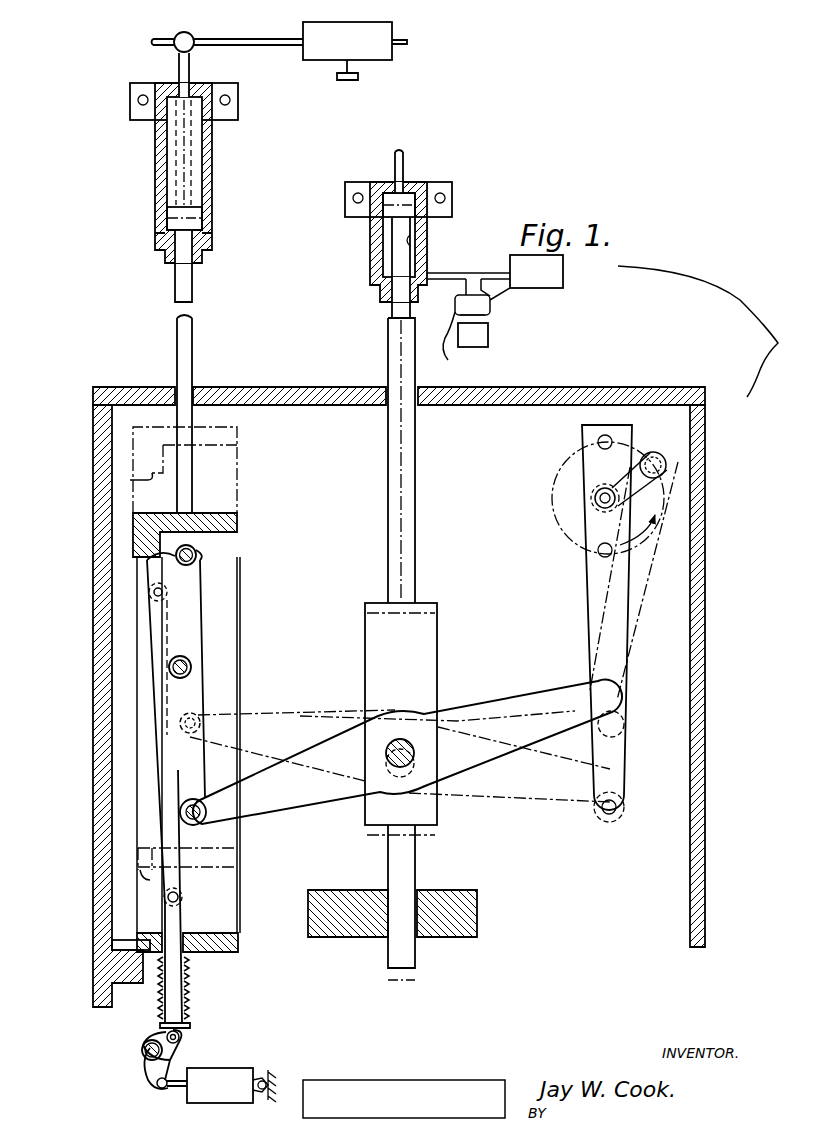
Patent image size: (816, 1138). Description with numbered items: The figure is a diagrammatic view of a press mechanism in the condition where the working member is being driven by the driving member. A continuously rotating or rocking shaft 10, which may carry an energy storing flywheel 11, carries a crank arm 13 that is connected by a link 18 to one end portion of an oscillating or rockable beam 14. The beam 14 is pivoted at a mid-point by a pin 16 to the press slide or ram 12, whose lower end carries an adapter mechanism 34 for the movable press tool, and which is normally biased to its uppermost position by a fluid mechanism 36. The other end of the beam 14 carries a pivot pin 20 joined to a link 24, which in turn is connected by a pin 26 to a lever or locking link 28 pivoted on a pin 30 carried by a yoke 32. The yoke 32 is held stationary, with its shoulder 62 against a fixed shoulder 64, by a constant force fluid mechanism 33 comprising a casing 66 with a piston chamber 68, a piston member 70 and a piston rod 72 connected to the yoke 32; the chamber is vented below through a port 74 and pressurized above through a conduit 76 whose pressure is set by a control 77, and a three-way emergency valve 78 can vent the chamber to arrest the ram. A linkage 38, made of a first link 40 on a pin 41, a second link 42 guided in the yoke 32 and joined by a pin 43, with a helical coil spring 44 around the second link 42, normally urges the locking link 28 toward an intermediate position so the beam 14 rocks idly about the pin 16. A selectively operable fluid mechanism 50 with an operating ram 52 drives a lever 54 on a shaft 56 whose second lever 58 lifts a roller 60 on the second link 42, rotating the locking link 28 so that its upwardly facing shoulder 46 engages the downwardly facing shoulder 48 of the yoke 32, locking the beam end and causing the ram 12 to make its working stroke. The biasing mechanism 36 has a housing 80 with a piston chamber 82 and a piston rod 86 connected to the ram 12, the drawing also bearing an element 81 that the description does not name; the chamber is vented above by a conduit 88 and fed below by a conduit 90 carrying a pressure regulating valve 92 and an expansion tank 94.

The shaft 10 is at (565, 518).
The flywheel 11 is at (722, 291).
The press slide or ram 12 is at (545, 815).
The crank arm 13 is at (578, 474).
The oscillating or rockable beam 14 is at (507, 697).
The pin 16 is at (414, 747).
The link 18 is at (588, 582).
The pivot pin 20 is at (208, 808).
The link 24 is at (200, 733).
The pin 26 is at (192, 664).
The lever or locking link 28 is at (197, 600).
The pin 30 is at (198, 558).
The yoke 32 is at (240, 437).
The fluid mechanism 33 is at (222, 128).
The adapter mechanism 34 is at (422, 873).
The fluid mechanism 36 is at (432, 175).
The linkage 38 is at (196, 908).
The first link 40 is at (175, 853).
The pin 41 is at (164, 591).
The second link 42 is at (186, 970).
The pin 43 is at (178, 897).
The helical coil spring 44 is at (182, 992).
The upwardly facing shoulder 46 is at (145, 555).
The downwardly facing shoulder 48 is at (130, 480).
The selectively operable fluid mechanism 50 is at (236, 1066).
The operating ram 52 is at (176, 1092).
The lever 54 is at (152, 1086).
The shaft 56 is at (142, 1051).
The second lever 58 is at (185, 1052).
The roller 60 is at (180, 1035).
The shoulder 62 is at (142, 877).
The shoulder 64 is at (124, 945).
The casing 66 is at (214, 184).
The piston chamber 68 is at (200, 145).
The piston member 70 is at (200, 219).
The piston rod 72 is at (192, 290).
The port 74 is at (160, 230).
The conduit 76 is at (189, 72).
The control 77 is at (388, 60).
The three-way emergency valve 78 is at (170, 52).
The housing 80 is at (428, 234).
The cylinder 81 is at (378, 225).
The piston chamber 82 is at (415, 243).
The piston rod 86 is at (388, 311).
The conduit 88 is at (404, 152).
The conduit 90 is at (455, 274).
The pressure regulating valve 92 is at (563, 270).
The expansion tank 94 is at (488, 343).